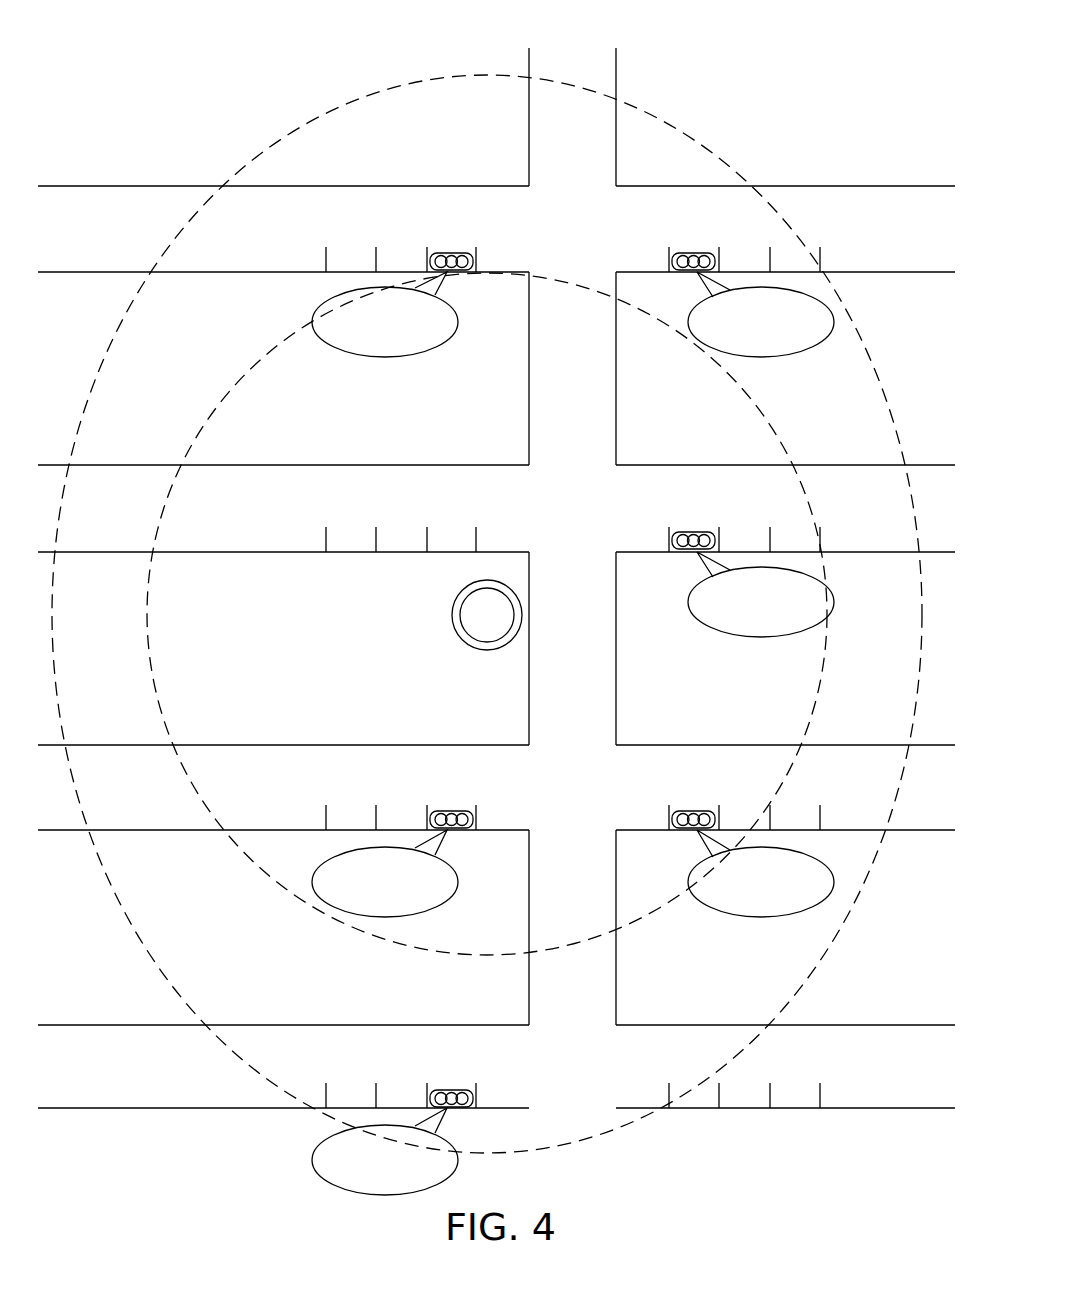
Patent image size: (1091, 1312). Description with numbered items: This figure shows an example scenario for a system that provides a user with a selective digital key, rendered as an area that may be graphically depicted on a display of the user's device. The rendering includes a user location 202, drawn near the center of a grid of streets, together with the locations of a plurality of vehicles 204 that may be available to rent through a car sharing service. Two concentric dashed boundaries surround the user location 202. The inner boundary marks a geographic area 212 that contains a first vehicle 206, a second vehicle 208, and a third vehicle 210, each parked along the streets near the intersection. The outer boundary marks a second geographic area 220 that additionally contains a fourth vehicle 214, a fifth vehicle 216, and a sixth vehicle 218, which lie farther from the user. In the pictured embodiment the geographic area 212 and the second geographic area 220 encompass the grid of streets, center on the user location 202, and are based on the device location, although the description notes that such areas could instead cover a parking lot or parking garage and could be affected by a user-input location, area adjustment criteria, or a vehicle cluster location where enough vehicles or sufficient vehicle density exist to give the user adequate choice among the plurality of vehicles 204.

The user location 202 is at (522, 615).
The plurality of vehicles 204 is at (352, 637).
The first vehicle 206 is at (447, 811).
The second vehicle 208 is at (694, 811).
The third vehicle 210 is at (694, 532).
The geographic area 212 is at (573, 280).
The fourth vehicle 214 is at (694, 253).
The fifth vehicle 216 is at (447, 253).
The sixth vehicle 218 is at (447, 1090).
The second geographic area 220 is at (680, 128).